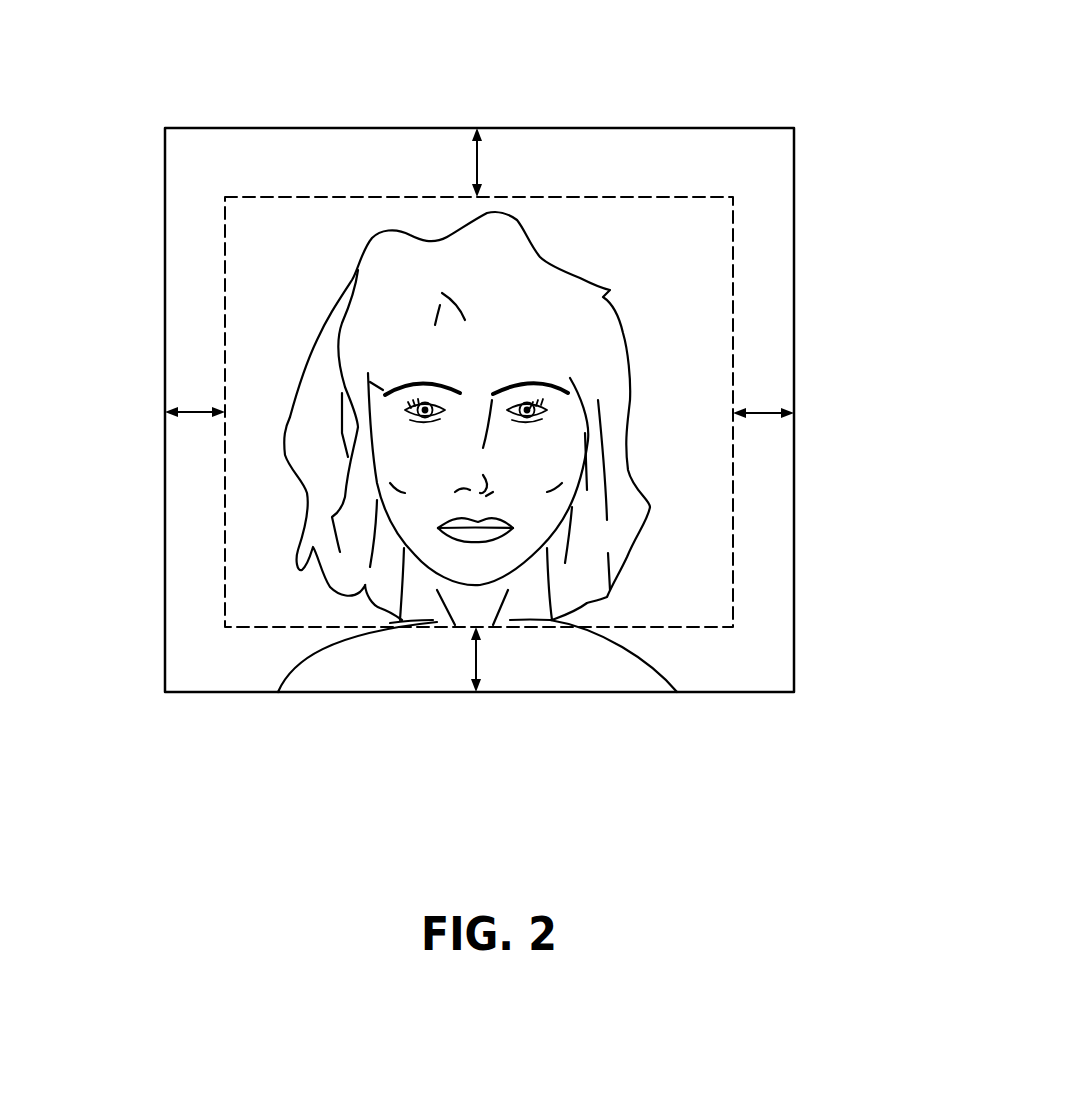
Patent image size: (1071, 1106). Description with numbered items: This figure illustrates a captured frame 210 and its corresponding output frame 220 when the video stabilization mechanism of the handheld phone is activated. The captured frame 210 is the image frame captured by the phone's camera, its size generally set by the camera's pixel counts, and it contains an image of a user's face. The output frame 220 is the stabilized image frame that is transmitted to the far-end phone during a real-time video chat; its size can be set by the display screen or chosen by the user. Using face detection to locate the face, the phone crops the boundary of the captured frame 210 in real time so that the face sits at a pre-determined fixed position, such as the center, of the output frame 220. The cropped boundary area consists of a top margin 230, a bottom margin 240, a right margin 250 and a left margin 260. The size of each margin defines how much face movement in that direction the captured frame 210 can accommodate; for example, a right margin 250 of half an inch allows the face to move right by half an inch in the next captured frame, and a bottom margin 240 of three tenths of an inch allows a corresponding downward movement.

The captured frame 210 is at (678, 128).
The output frame 220 is at (735, 280).
The top margin 230 is at (473, 162).
The bottom margin 240 is at (485, 668).
The right margin 250 is at (765, 410).
The left margin 260 is at (202, 408).